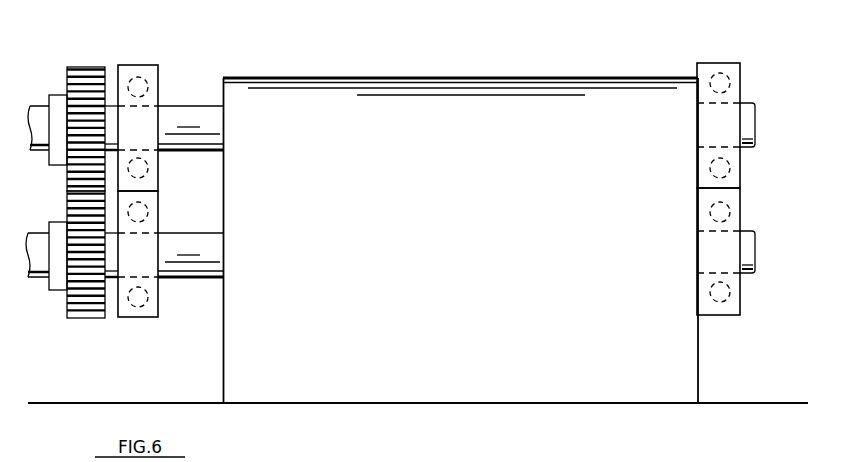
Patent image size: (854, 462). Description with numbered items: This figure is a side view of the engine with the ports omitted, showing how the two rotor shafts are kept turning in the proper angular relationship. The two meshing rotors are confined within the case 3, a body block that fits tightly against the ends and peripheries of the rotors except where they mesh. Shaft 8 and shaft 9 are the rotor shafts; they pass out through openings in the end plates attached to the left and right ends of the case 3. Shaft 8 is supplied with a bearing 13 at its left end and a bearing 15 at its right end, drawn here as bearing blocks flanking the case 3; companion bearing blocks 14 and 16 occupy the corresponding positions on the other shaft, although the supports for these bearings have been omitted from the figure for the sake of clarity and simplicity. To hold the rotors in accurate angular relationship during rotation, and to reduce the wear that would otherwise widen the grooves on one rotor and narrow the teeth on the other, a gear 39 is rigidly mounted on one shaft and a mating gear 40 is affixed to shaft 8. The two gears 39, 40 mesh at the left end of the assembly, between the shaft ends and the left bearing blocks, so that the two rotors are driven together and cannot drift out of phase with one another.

The case 3 is at (607, 103).
The shaft 8 is at (43, 267).
The shaft 9 is at (42, 110).
The bearing 13 is at (150, 222).
The upper left bearing block 14 is at (133, 72).
The bearing 15 is at (733, 208).
The upper right bearing block 16 is at (733, 98).
The gear 39 is at (75, 220).
The mating gear 40 is at (92, 70).